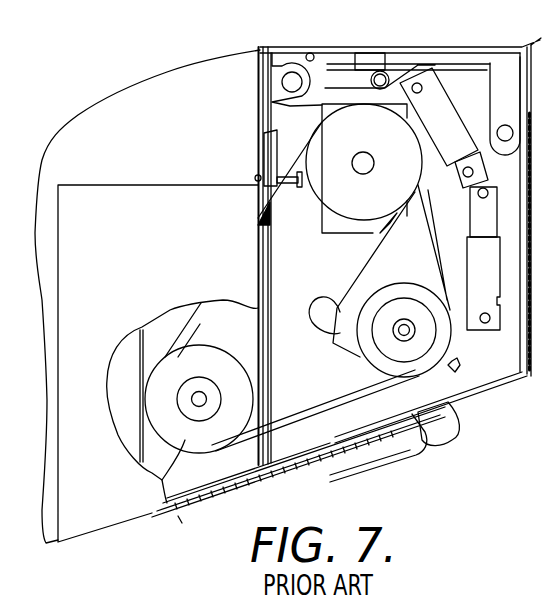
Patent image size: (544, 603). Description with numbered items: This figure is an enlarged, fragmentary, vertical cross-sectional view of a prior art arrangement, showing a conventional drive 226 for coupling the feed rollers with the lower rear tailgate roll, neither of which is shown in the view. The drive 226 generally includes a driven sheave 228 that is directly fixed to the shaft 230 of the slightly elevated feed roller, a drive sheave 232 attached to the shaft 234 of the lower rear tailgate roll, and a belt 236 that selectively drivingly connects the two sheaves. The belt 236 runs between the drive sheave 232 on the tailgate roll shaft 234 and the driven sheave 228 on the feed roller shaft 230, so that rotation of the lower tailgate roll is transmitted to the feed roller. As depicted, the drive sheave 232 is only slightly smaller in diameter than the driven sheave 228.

The drive 226 is at (453, 363).
The driven sheave 228 is at (330, 157).
The shaft 230 is at (363, 165).
The drive sheave 232 is at (153, 482).
The shaft 234 is at (196, 398).
The belt 236 is at (356, 397).